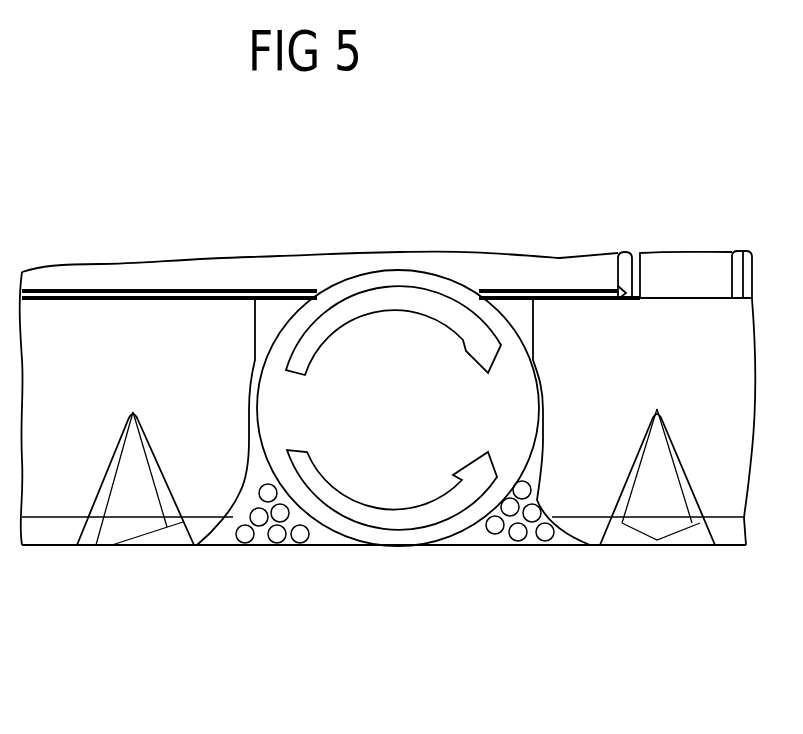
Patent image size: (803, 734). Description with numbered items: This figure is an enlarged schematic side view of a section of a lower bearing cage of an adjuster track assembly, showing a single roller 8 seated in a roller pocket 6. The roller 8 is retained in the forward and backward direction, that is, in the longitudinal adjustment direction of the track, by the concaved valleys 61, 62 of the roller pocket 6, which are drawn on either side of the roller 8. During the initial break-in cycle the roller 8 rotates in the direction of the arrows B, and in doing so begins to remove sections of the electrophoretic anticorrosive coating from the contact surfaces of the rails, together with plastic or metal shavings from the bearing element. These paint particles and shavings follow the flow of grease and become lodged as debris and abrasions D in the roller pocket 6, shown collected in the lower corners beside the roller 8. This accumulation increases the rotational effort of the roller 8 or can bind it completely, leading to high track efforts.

The roller pocket 6 is at (323, 564).
The concaved valley 61 is at (247, 400).
The concaved valley 62 is at (543, 397).
The roller 8 is at (387, 480).
The arrows B is at (418, 303).
The debris and abrasions D is at (520, 535).